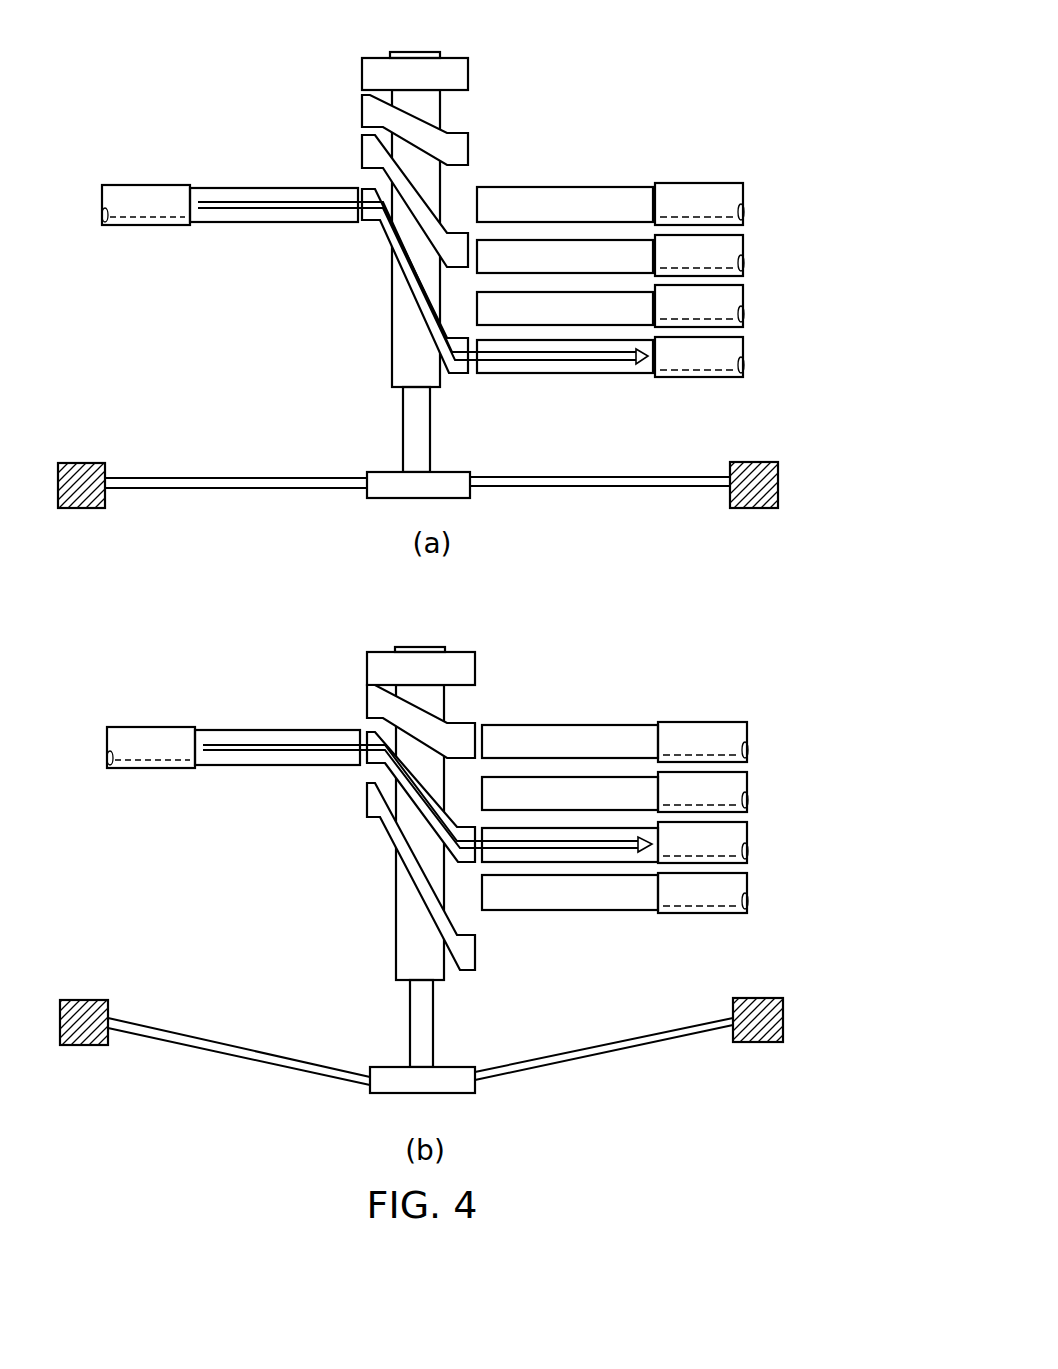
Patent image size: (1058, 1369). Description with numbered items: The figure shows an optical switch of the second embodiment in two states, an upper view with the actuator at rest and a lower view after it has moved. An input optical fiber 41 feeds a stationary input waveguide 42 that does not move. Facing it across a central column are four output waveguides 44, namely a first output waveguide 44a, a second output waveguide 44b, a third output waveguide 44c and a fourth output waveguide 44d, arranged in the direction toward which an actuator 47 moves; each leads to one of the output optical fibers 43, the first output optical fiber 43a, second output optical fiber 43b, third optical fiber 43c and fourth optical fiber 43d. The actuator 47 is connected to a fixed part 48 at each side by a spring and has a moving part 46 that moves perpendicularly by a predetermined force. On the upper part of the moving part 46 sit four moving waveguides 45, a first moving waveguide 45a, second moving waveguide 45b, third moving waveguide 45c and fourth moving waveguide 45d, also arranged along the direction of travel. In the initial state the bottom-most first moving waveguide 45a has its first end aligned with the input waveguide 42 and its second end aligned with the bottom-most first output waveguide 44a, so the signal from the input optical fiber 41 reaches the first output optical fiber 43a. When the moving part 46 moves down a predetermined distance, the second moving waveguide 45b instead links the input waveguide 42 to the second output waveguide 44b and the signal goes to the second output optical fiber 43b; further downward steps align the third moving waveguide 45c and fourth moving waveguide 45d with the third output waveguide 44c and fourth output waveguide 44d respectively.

The input optical fiber 41 is at (140, 185).
The input waveguide 42 is at (262, 188).
The output optical fibers 43 is at (769, 548).
The first output optical fiber 43a is at (740, 624).
The second output optical fiber 43b is at (745, 298).
The third optical fiber 43c is at (745, 248).
The fourth optical fiber 43d is at (745, 198).
The output waveguides 44 is at (569, 550).
The first output waveguide 44a is at (527, 370).
The second output waveguide 44b is at (600, 310).
The third output waveguide 44c is at (530, 248).
The fourth output waveguide 44d is at (620, 195).
The moving waveguides 45 is at (410, 486).
The first moving waveguide 45a is at (372, 225).
The second moving waveguide 45b is at (362, 152).
The third moving waveguide 45c is at (362, 100).
The fourth moving waveguide 45d is at (470, 72).
The moving part 46 is at (392, 360).
The actuator 47 is at (370, 472).
The fixed part 48 is at (88, 463).